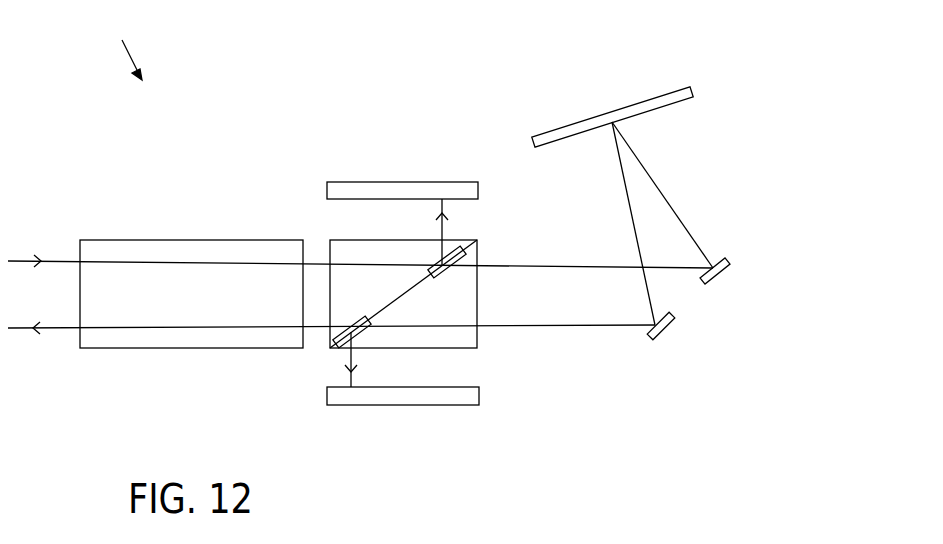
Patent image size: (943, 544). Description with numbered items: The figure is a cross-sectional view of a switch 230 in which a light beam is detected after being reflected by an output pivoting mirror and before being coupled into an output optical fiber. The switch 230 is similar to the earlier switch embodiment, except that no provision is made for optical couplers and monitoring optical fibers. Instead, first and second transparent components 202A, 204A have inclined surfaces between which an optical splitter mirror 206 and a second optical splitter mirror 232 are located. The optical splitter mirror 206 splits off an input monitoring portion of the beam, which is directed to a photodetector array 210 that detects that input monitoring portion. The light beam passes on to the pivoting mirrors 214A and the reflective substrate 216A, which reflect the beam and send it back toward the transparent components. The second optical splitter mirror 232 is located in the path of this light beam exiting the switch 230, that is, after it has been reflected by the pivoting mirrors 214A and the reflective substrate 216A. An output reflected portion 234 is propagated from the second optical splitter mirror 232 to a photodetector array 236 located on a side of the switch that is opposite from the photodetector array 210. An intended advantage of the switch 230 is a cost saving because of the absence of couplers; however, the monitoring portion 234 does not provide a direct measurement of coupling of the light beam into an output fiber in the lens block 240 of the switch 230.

The switch 230 is at (116, 46).
The lens block 240 is at (158, 252).
The first transparent component 202A is at (355, 252).
The second transparent component 204A is at (460, 300).
The optical splitter mirror 206 is at (460, 240).
The photodetector array 210 is at (415, 182).
The second optical splitter mirror 232 is at (380, 348).
The output reflected portion 234 is at (325, 359).
The photodetector array 236 is at (445, 405).
The pivoting mirrors 214A is at (725, 258).
The reflective substrate 216A is at (643, 105).